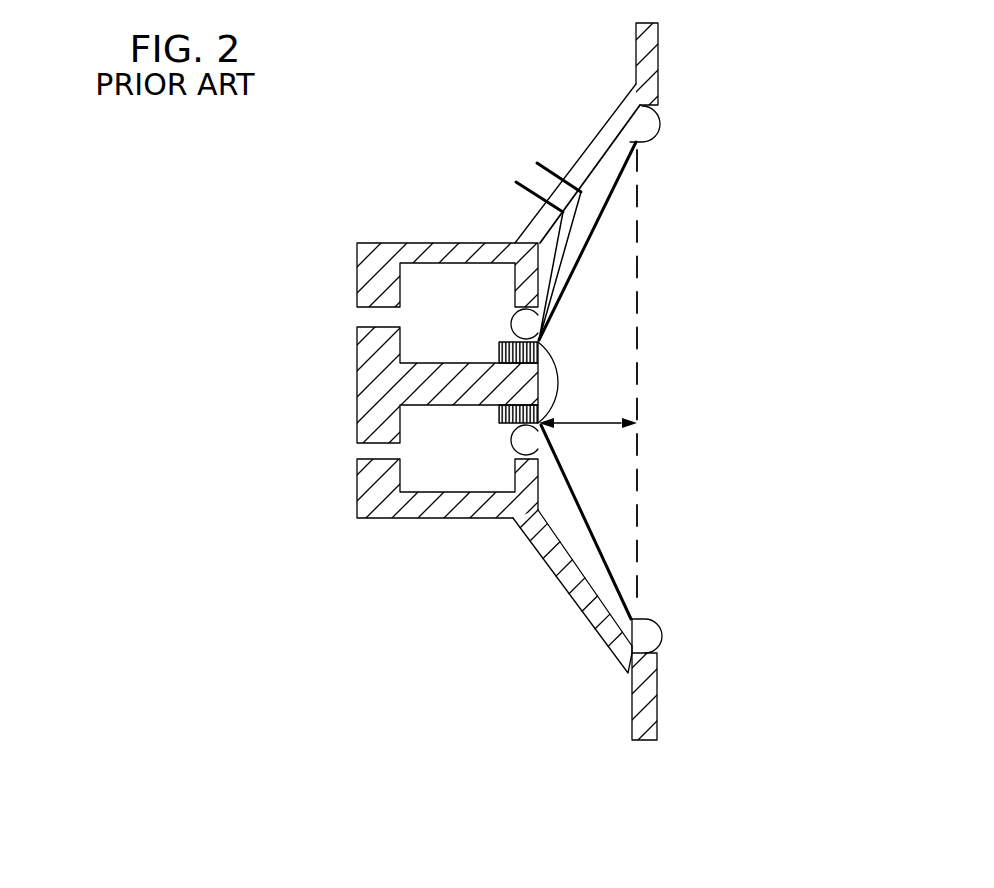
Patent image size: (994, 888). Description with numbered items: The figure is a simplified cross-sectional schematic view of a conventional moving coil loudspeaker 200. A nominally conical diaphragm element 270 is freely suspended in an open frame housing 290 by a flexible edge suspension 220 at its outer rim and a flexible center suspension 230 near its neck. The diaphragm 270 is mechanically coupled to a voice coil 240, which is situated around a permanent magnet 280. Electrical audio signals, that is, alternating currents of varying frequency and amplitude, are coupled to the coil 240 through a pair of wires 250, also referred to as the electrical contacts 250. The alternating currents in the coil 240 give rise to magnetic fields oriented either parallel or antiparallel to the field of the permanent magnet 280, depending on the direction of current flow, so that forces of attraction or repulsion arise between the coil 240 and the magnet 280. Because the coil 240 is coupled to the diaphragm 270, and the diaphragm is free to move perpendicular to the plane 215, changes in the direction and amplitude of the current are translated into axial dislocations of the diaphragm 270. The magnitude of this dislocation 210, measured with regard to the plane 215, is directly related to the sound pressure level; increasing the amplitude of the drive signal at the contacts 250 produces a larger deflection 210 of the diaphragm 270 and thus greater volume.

The prior art loudspeaker 200 is at (207, 240).
The dislocation 210 is at (596, 420).
The plane 215 is at (640, 460).
The flexible edge suspension 220 is at (659, 123).
The flexible center suspension 230 is at (514, 434).
The voice coil 240 is at (507, 424).
The wires 250 is at (508, 167).
The diaphragm element 270 is at (608, 196).
The permanent magnet 280 is at (357, 385).
The open frame housing 290 is at (577, 607).